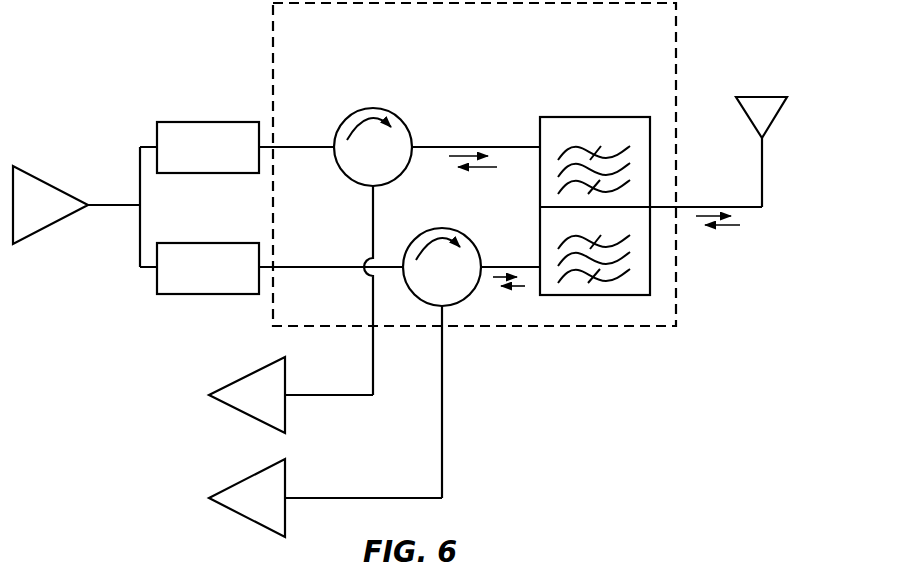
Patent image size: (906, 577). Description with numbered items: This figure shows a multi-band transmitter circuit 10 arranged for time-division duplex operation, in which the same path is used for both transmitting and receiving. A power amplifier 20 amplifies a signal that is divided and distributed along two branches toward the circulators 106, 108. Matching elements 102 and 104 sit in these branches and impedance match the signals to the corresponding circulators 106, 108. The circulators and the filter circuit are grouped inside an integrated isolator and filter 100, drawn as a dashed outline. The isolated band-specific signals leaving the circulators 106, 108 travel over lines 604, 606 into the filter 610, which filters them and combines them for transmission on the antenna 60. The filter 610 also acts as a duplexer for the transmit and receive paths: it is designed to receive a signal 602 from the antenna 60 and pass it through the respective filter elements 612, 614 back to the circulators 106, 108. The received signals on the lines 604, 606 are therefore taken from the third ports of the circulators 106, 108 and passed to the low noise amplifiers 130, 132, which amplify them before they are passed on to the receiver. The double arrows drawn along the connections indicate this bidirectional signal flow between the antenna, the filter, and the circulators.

The multi-band transmitter circuit 10 is at (226, 67).
The power amplifier 20 is at (85, 207).
The antenna 60 is at (760, 125).
The integrated isolator and filter 100 is at (664, 35).
The matching element 102 is at (223, 167).
The matching element 104 is at (223, 287).
The circulator 106 is at (392, 163).
The circulator 108 is at (457, 283).
The low noise amplifier 130 is at (270, 395).
The low noise amplifier 132 is at (304, 498).
The signal 602 is at (697, 206).
The line 604 is at (493, 135).
The line 606 is at (528, 243).
The filter 610 is at (592, 117).
The filter element 612 is at (640, 146).
The filter element 614 is at (640, 233).